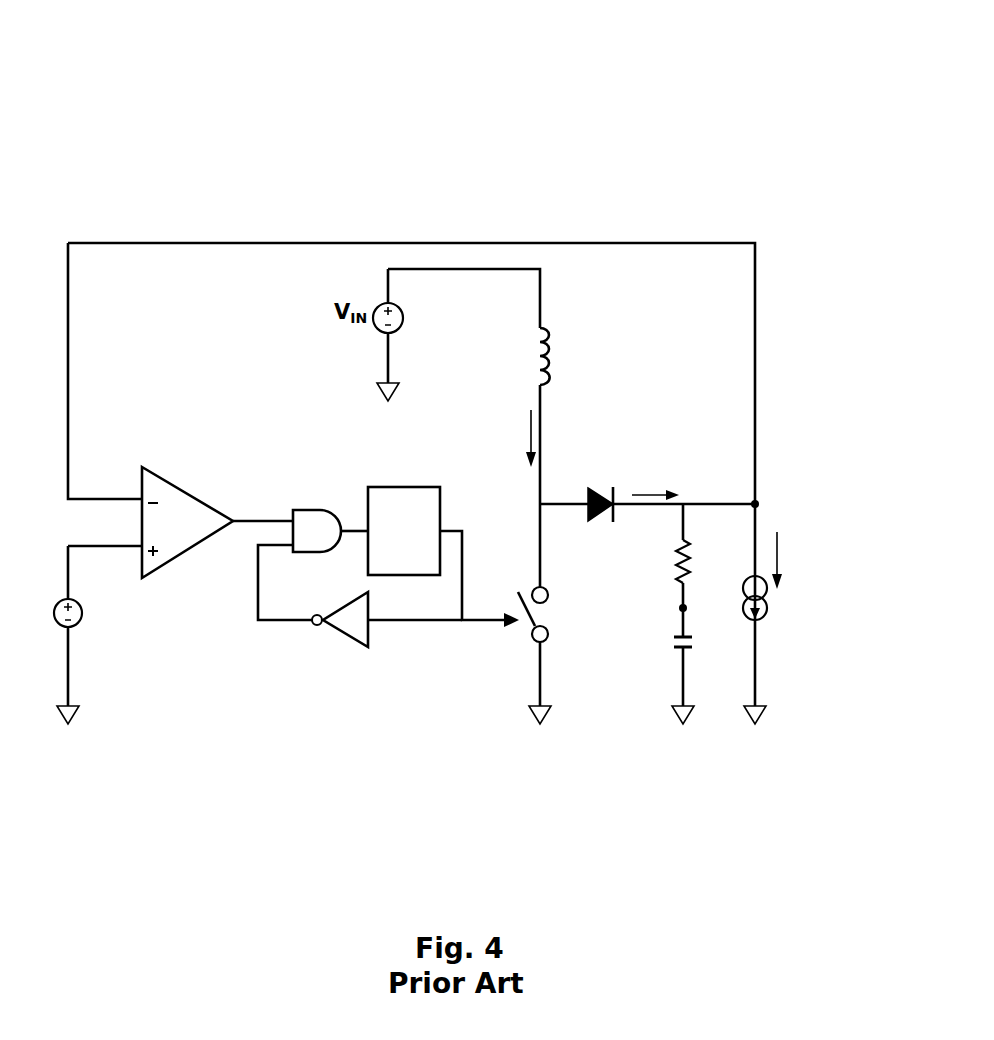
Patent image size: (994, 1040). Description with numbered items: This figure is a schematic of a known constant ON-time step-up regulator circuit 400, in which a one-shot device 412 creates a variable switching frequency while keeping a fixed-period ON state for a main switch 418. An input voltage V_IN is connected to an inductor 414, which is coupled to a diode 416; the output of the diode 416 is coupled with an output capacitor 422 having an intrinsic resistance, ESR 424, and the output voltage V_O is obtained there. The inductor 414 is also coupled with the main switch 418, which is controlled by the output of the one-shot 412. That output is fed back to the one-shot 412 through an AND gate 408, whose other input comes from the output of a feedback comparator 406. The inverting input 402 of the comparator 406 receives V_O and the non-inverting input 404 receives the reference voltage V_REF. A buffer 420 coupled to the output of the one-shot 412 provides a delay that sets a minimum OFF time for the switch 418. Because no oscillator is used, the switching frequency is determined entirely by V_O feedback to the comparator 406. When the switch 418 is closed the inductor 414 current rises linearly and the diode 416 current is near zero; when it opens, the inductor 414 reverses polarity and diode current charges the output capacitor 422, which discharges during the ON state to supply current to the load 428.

The circuit 400 is at (663, 120).
The inverting input 402 is at (88, 483).
The non-inverting input 404 is at (90, 565).
The feedback comparator 406 is at (170, 565).
The AND gate 408 is at (307, 505).
The one-shot device 412 is at (442, 505).
The inductor 414 is at (545, 322).
The diode 416 is at (605, 490).
The main switch 418 is at (548, 612).
The buffer 420 is at (305, 638).
The output capacitor 422 is at (668, 660).
The ESR 424 is at (668, 540).
The load 428 is at (805, 600).